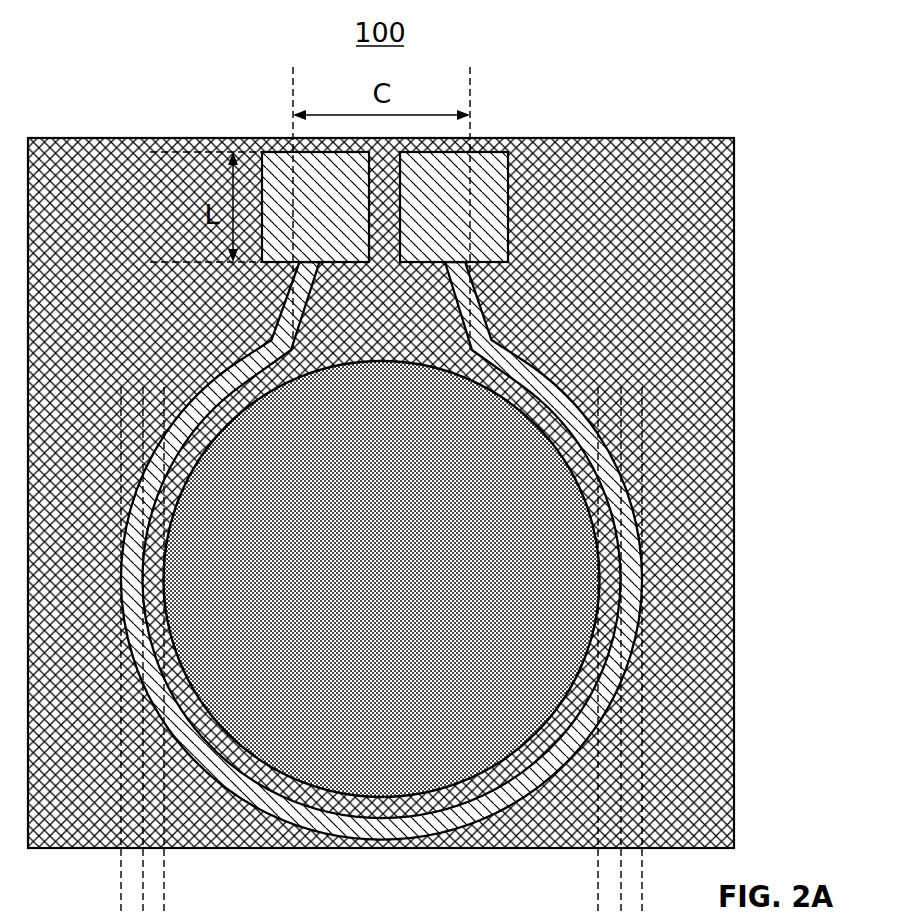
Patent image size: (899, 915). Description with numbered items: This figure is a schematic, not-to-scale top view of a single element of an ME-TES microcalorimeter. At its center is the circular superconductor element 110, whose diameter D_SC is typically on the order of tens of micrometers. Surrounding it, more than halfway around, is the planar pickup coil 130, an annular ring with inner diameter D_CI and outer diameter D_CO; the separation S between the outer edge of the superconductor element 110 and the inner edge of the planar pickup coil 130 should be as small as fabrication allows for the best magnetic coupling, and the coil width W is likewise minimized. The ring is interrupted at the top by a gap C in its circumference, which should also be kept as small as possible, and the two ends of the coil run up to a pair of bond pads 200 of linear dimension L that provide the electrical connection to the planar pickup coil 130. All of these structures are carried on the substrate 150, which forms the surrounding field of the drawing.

The superconductor element 110 is at (432, 540).
The planar pickup coil 130 is at (557, 380).
The substrate 150 is at (607, 283).
The bond pads 200 is at (347, 220).